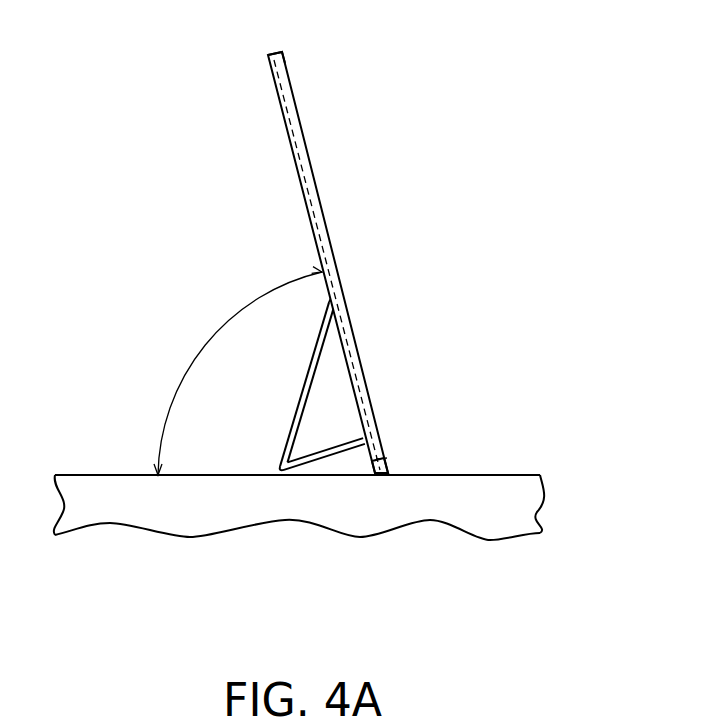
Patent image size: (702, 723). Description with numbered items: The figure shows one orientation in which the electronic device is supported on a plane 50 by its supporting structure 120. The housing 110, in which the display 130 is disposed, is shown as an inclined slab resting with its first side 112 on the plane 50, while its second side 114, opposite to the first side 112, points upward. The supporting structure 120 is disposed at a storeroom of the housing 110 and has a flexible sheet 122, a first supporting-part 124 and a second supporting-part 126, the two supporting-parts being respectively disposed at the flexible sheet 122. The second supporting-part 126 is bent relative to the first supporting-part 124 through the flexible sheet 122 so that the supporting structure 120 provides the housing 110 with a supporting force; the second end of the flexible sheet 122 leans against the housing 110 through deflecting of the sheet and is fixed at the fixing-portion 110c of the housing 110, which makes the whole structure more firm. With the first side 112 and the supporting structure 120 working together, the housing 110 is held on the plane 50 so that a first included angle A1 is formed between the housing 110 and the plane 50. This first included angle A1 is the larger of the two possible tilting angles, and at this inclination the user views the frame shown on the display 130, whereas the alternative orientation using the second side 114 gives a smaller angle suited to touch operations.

The plane 50 is at (491, 464).
The housing 110 is at (327, 310).
The fixing-portion 110c is at (389, 456).
The first side 112 is at (387, 477).
The second side 114 is at (275, 52).
The supporting structure 120 is at (351, 449).
The flexible sheet 122 is at (316, 354).
The first supporting-part 124 is at (331, 340).
The second supporting-part 126 is at (342, 440).
The display 130 is at (318, 227).
The first included angle A1 is at (238, 371).